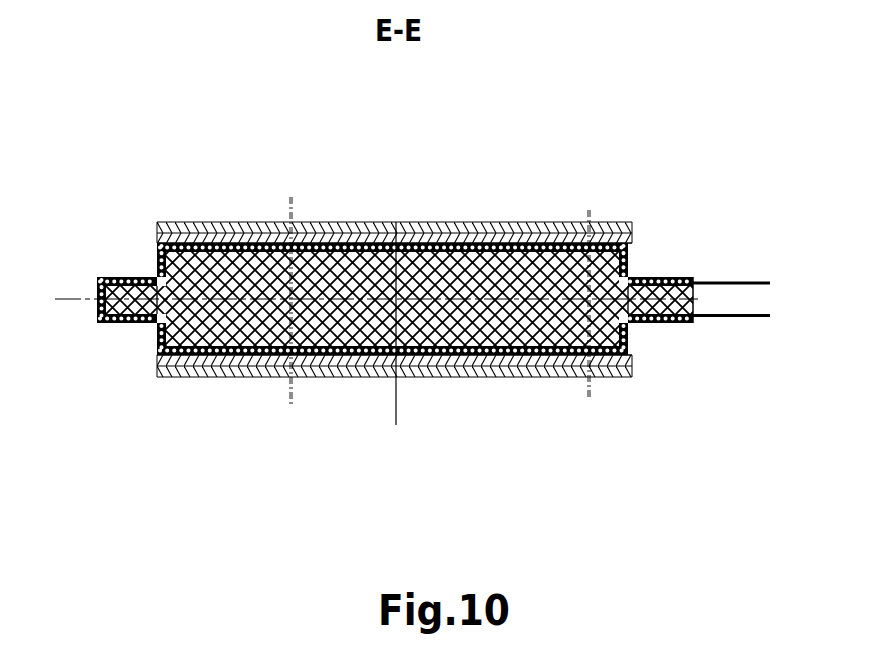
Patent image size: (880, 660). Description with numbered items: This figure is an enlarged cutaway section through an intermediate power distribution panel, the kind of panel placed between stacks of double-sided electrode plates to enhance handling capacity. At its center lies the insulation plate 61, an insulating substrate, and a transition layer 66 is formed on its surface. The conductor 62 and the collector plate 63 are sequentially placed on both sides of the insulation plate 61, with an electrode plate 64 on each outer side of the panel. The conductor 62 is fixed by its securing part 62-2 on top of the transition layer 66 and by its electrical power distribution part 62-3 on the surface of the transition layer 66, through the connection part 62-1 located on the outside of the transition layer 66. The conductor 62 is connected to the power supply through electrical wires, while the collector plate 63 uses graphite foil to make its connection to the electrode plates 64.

The insulation plate 61 is at (192, 295).
The conductor 62 is at (433, 311).
The connection part 62-1 is at (700, 282).
The securing part 62-2 is at (563, 243).
The electrical power distribution part 62-3 is at (395, 228).
The collector plate 63 is at (303, 243).
The electrode plate 64 is at (370, 232).
The transition layer 66 is at (211, 243).